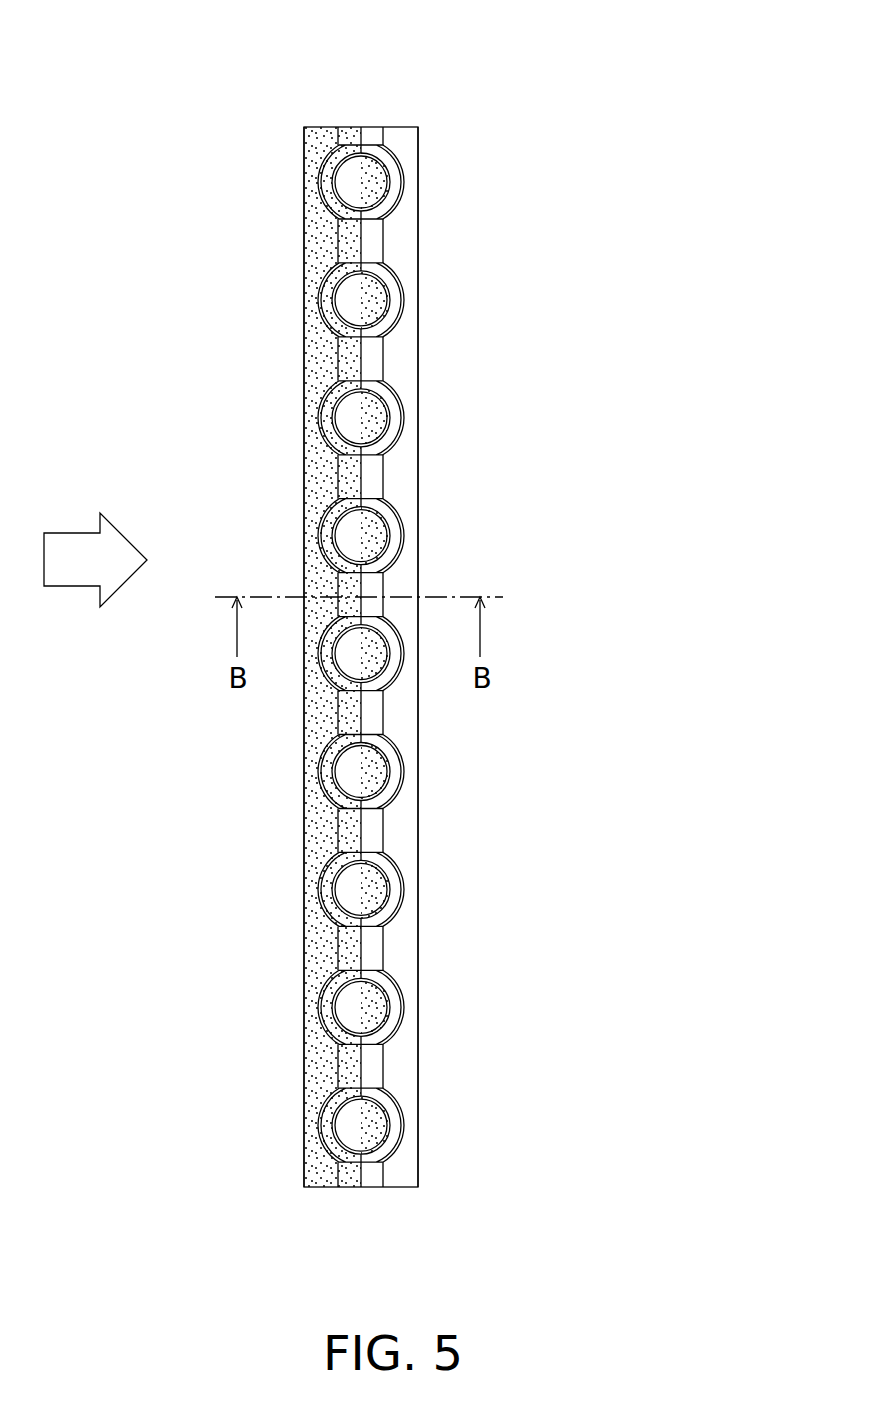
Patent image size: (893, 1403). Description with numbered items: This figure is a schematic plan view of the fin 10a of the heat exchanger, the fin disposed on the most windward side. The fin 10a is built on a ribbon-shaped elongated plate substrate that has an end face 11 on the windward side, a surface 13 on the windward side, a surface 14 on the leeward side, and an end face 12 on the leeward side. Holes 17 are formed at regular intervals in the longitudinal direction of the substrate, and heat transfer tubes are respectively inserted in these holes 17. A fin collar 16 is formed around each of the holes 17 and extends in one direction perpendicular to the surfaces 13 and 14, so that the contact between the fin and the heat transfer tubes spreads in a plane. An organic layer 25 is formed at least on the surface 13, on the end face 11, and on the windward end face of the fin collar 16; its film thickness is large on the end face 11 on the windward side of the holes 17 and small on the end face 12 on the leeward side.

The fin 10a is at (474, 126).
The end face on the windward side 11 is at (269, 830).
The end face on the leeward side 12 is at (448, 830).
The surface on the windward side 13 is at (341, 852).
The surface on the leeward side 14 is at (395, 851).
The fin collar 16 is at (400, 187).
The holes 17 is at (356, 177).
The organic layer 25 is at (321, 136).